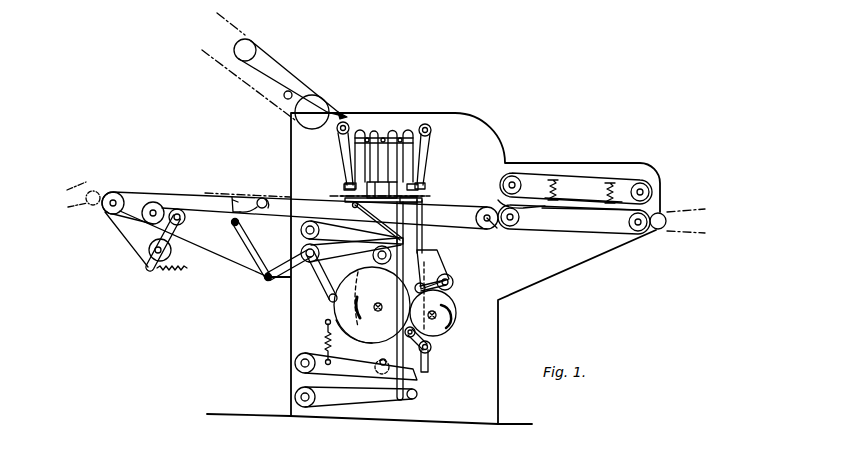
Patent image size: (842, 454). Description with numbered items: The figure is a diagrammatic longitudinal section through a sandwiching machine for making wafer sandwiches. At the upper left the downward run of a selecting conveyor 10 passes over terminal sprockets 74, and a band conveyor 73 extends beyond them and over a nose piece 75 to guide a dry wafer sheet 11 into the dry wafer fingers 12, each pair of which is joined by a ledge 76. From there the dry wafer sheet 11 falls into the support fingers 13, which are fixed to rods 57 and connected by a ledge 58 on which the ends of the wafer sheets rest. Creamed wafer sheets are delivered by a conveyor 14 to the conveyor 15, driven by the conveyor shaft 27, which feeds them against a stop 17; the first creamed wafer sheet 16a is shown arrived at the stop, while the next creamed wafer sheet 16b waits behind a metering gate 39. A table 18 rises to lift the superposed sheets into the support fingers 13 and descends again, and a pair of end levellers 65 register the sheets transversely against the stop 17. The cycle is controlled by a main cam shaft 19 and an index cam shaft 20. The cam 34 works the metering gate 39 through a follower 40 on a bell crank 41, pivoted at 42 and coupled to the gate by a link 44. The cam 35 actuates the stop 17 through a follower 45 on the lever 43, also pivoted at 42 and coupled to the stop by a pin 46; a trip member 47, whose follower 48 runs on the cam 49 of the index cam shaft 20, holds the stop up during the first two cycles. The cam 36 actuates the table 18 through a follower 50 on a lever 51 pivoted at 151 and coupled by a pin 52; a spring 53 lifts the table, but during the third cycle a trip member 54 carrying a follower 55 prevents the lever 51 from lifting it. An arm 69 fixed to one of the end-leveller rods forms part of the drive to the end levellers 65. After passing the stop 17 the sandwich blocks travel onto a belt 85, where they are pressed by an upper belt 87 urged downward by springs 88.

The selecting conveyor 10 is at (236, 20).
The band conveyor 73 is at (286, 66).
The terminal sprockets 74 is at (305, 118).
The nose piece 75 is at (346, 113).
The rod 57 is at (429, 125).
The ledge 76 is at (361, 163).
The support fingers 13 is at (425, 142).
The dry wafer fingers 12 is at (407, 153).
The dry wafer sheet 11 is at (405, 180).
The end levellers 65 is at (380, 188).
The ledge 58 is at (414, 186).
The creamed wafer sheet 16a is at (418, 198).
The stop 17 is at (423, 211).
The table 18 is at (353, 205).
The conveyor 14 is at (95, 186).
The conveyor 15 is at (134, 190).
The metering gate 39 is at (231, 195).
The creamed wafer sheet 16b is at (254, 192).
The link 44 is at (253, 250).
The pivot 42 is at (301, 251).
The lever 43 is at (347, 255).
The bell crank 41 is at (318, 273).
The follower 40 is at (329, 298).
The cam 34 is at (337, 310).
The main cam shaft 19 is at (377, 317).
The spring 53 is at (326, 338).
The cam 36 is at (340, 338).
The follower 45 is at (381, 265).
The pin 46 is at (413, 246).
The cam 35 is at (438, 255).
The trip member 47 is at (447, 274).
The follower 48 is at (416, 289).
The index cam shaft 20 is at (450, 300).
The cam 49 is at (456, 311).
The follower 55 is at (415, 331).
The trip member 54 is at (430, 364).
The follower 50 is at (379, 362).
The pivot 151 is at (295, 364).
The lever 51 is at (327, 368).
The pin 52 is at (397, 400).
The conveyor shaft 27 is at (494, 226).
The belt 85 is at (560, 199).
The upper belt 87 is at (628, 187).
The springs 88 is at (607, 191).
The arm 69 is at (690, 211).